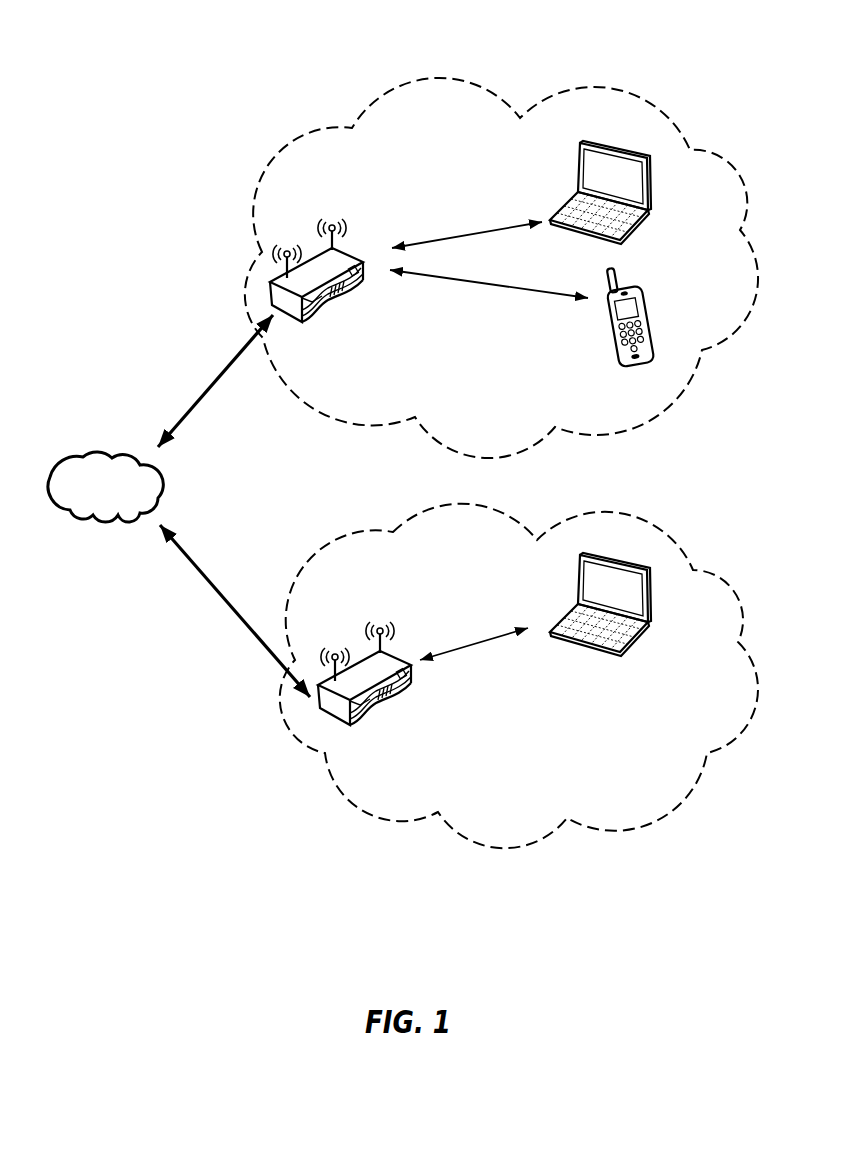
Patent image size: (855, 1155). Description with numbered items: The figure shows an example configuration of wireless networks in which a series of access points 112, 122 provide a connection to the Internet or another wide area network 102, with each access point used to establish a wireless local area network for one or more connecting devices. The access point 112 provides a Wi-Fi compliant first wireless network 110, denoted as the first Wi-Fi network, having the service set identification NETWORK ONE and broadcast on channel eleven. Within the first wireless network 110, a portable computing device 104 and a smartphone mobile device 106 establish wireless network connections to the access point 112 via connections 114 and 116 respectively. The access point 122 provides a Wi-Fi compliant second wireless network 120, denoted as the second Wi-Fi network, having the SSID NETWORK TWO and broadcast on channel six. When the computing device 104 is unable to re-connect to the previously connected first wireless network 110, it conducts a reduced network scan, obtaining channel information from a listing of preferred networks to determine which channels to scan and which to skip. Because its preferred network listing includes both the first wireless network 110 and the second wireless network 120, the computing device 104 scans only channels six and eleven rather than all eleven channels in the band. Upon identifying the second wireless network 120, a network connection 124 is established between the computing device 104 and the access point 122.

The wide area network 102 is at (126, 452).
The portable computing device 104 is at (620, 147).
The smartphone mobile device 106 is at (645, 290).
The first wireless network 110 is at (378, 98).
The access point 112 is at (340, 311).
The connection 114 is at (467, 227).
The connection 116 is at (489, 290).
The second wireless network 120 is at (393, 532).
The access point 122 is at (367, 724).
The network connection 124 is at (474, 637).